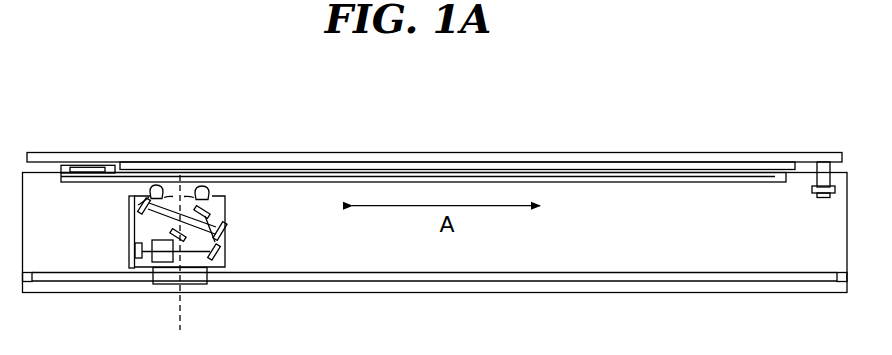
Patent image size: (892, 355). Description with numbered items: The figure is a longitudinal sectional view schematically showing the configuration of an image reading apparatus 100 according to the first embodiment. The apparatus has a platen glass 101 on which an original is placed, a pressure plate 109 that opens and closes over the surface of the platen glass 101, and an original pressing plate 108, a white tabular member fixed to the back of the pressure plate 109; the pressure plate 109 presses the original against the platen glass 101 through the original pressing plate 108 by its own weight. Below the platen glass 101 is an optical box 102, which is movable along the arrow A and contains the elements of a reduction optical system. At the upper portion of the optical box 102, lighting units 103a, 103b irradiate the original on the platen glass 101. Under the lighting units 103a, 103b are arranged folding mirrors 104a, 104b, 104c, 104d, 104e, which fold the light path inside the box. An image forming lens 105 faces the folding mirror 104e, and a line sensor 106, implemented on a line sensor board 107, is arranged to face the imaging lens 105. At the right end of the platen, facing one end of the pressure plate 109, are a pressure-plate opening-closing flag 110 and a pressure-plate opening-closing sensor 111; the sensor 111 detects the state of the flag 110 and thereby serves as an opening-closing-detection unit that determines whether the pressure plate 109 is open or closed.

The image reading apparatus 100 is at (622, 120).
The platen glass 101 is at (750, 182).
The optical box 102 is at (218, 270).
The lighting unit 103a is at (155, 184).
The lighting unit 103b is at (203, 185).
The folding mirror 104a is at (173, 233).
The folding mirror 104b is at (224, 229).
The folding mirror 104c is at (136, 198).
The folding mirror 104d is at (205, 211).
The folding mirror 104e is at (221, 252).
The image forming lens 105 is at (164, 263).
The line sensor 106 is at (138, 262).
The line sensor board 107 is at (129, 221).
The original pressing plate 108 is at (767, 165).
The pressure plate 109 is at (725, 158).
The pressure-plate opening-closing flag 110 is at (823, 163).
The pressure-plate opening-closing sensor 111 is at (823, 198).